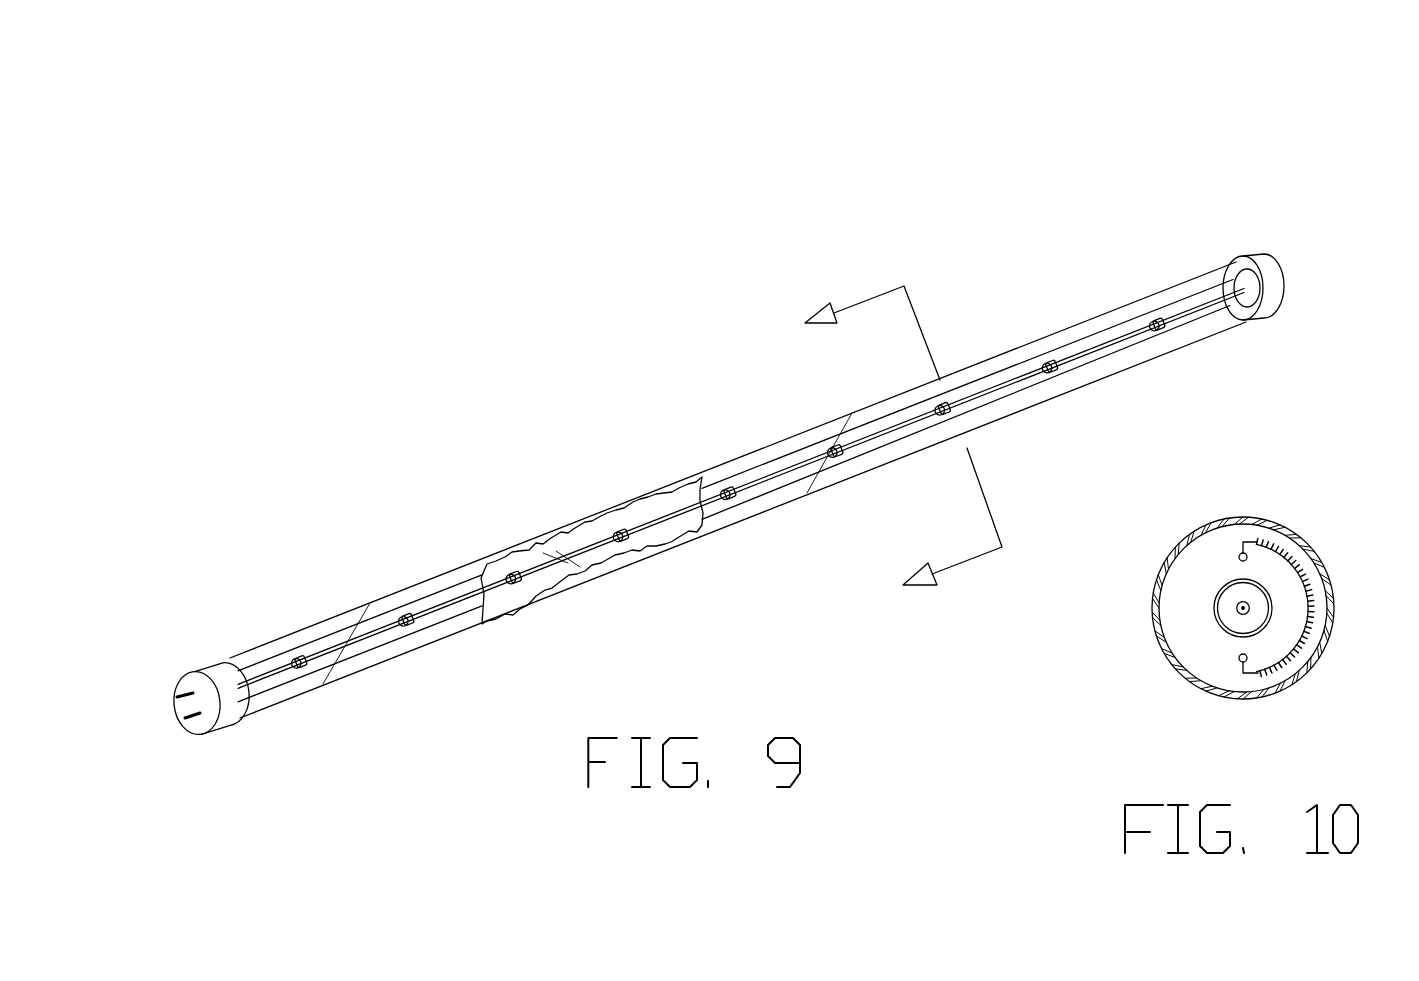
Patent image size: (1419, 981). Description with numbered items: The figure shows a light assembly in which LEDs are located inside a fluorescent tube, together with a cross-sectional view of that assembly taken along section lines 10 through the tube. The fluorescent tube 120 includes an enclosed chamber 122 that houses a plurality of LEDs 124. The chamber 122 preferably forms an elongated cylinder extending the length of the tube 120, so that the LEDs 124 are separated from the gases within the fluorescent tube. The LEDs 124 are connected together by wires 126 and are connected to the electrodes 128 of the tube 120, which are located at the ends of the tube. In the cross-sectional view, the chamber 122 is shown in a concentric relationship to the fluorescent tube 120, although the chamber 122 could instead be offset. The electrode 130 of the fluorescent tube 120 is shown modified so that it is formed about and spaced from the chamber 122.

In FIG. 9, the section lines 10 is at (752, 320).
In FIG. 9, the fluorescent tube 120 is at (450, 640).
In FIG. 10, the fluorescent tube 120 is at (1172, 656).
In FIG. 9, the enclosed chamber 122 is at (582, 530).
In FIG. 10, the enclosed chamber 122 is at (1220, 587).
In FIG. 9, the LEDs 124 is at (518, 577).
In FIG. 10, the LEDs 124 is at (1237, 608).
In FIG. 9, the wires 126 is at (665, 510).
In FIG. 9, the electrodes 128 is at (1278, 264).
In FIG. 10, the electrode 130 is at (1285, 552).